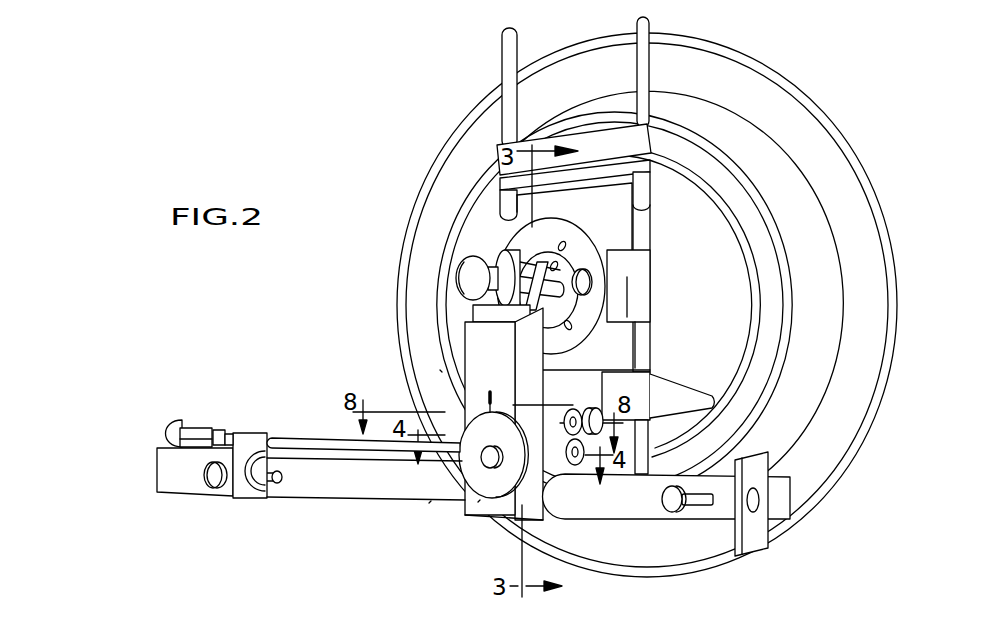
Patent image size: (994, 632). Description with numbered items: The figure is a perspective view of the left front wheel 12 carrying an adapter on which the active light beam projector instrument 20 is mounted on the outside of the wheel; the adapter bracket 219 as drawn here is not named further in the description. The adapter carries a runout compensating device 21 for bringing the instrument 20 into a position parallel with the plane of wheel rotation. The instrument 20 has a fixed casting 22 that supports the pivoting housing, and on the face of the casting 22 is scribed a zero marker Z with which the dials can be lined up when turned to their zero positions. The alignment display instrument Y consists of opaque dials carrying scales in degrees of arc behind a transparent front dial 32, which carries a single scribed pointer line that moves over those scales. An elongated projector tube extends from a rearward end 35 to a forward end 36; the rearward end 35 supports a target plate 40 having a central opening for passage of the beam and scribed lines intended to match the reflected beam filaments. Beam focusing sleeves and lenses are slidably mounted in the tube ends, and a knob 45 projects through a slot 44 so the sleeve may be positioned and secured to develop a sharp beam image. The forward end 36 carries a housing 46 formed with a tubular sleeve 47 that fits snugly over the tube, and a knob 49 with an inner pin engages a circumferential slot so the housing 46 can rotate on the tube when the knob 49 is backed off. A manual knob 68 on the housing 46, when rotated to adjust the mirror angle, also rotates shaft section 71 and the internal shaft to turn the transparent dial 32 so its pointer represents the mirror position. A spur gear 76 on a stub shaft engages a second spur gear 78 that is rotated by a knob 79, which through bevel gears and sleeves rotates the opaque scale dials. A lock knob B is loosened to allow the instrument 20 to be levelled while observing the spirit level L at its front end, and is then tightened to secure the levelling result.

The left front wheel 12 is at (838, 117).
The bracket frame 219 is at (650, 199).
The runout compensating device 21 is at (572, 256).
The lock knob B is at (466, 280).
The casting 22 is at (465, 334).
The zero marker Z is at (431, 386).
The transparent front dial 32 is at (465, 468).
The rearward end 35 is at (693, 482).
The target plate 40 is at (747, 543).
The slot 44 is at (700, 507).
The knob 45 is at (672, 510).
The second spur gear 78 is at (574, 410).
The knob 79 is at (596, 408).
The spur gear 76 is at (588, 470).
The housing 46 is at (162, 480).
The knob 49 is at (210, 485).
The tubular sleeve 47 is at (242, 495).
The knob 68 is at (180, 417).
The spirit level L is at (193, 423).
The enlarged section 71 is at (323, 438).
The forward end 36 is at (283, 458).
The light beam projector instrument 20 is at (429, 503).
The alignment display instrument Y is at (476, 506).